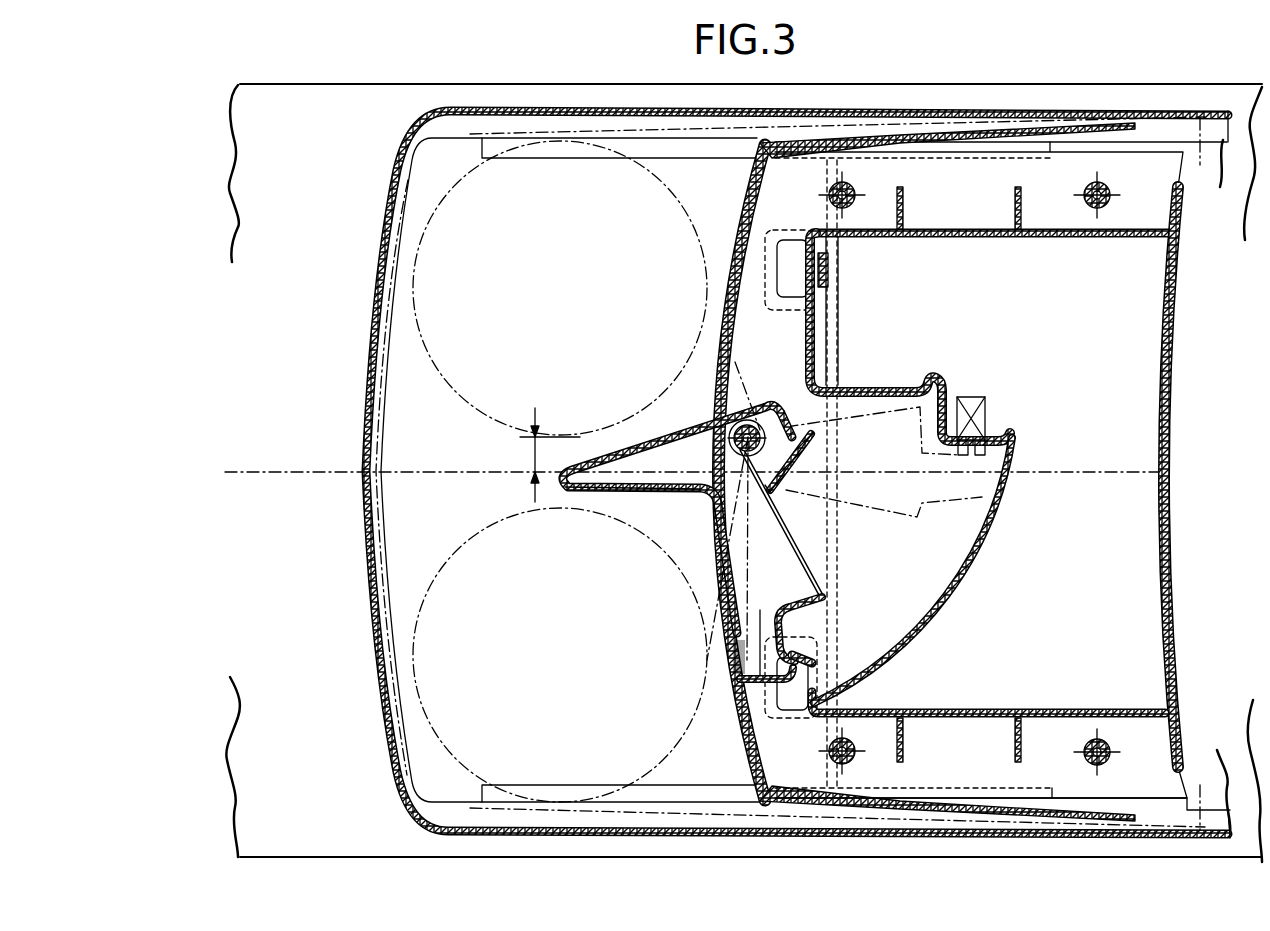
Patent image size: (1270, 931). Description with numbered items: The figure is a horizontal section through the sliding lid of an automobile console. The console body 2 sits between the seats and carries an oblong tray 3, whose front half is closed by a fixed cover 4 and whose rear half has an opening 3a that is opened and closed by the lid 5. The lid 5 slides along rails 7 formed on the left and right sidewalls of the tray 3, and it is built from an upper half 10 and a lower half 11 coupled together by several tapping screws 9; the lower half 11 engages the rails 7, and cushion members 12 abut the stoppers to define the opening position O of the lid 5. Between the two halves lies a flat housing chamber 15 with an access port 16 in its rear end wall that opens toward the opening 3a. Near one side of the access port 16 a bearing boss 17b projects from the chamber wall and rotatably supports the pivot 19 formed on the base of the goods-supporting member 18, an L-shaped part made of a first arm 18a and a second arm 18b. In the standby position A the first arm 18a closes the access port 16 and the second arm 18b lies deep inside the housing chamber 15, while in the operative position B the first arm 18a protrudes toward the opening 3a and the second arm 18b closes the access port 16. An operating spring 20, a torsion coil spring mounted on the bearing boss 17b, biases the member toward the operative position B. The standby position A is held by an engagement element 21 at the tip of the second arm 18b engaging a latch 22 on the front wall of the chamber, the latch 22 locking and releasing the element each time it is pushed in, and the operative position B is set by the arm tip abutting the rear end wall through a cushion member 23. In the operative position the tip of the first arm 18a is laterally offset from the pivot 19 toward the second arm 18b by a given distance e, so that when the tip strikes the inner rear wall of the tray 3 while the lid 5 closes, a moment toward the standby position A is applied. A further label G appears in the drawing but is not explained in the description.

The console body 2 is at (277, 83).
The tray 3 is at (370, 300).
The opening 3a is at (400, 425).
The fixed cover 4 is at (840, 338).
The lid 5 is at (722, 249).
The rails 7 is at (667, 152).
The tapping screws 9 is at (830, 190).
The upper half 10 is at (925, 142).
The lower half 11 is at (965, 240).
The cushion members 12 is at (825, 270).
The housing chamber 15 is at (927, 597).
The access port 16 is at (705, 398).
The bearing boss 17b is at (735, 455).
The goods-supporting member 18 is at (893, 405).
The first arm 18a is at (600, 493).
The second arm 18b is at (820, 573).
The pivot 19 is at (755, 428).
The operating spring 20 is at (755, 482).
The engagement element 21 is at (810, 653).
The latch 22 is at (982, 415).
The cushion member 23 is at (733, 662).
The gap G is at (437, 197).
The given distance e is at (533, 457).